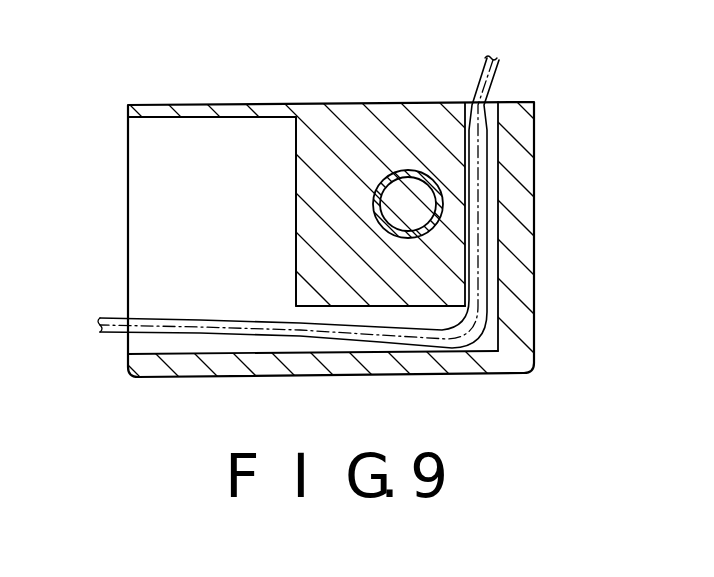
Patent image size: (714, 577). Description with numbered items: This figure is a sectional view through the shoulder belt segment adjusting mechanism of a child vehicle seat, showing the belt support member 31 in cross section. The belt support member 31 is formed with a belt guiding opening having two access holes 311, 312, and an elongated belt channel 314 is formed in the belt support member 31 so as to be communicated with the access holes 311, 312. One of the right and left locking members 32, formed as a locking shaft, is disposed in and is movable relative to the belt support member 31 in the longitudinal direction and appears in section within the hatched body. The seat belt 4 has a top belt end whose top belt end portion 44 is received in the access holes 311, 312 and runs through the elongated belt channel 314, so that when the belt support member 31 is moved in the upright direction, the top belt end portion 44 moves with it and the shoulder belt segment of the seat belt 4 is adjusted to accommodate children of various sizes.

The seat belt 4 is at (473, 86).
The belt support member 31 is at (525, 322).
The access hole 311 is at (256, 211).
The access hole 312 is at (155, 287).
The elongated belt channel 314 is at (492, 90).
The locking member 32 is at (440, 206).
The top belt end portion 44 is at (236, 327).